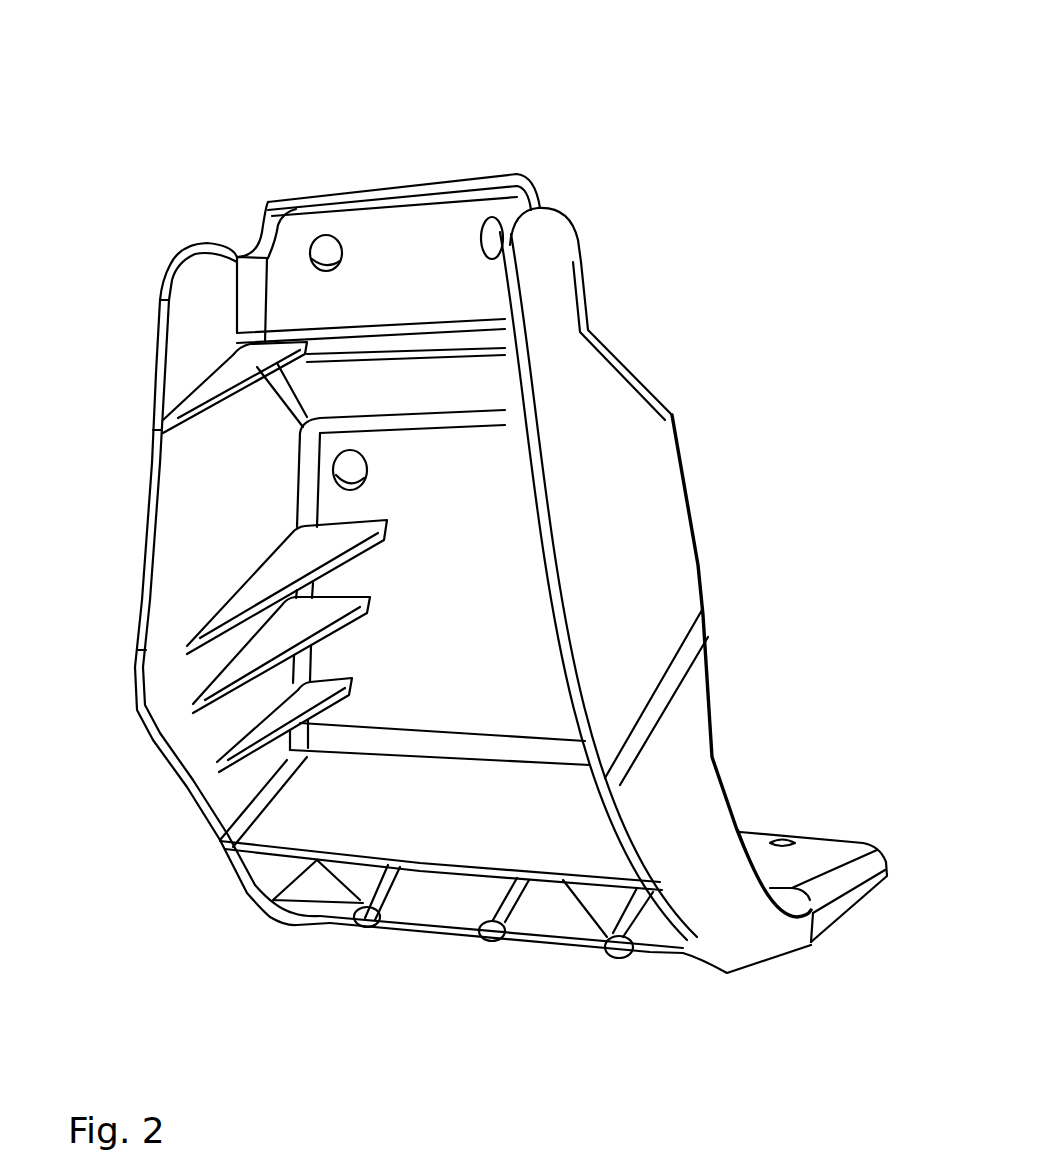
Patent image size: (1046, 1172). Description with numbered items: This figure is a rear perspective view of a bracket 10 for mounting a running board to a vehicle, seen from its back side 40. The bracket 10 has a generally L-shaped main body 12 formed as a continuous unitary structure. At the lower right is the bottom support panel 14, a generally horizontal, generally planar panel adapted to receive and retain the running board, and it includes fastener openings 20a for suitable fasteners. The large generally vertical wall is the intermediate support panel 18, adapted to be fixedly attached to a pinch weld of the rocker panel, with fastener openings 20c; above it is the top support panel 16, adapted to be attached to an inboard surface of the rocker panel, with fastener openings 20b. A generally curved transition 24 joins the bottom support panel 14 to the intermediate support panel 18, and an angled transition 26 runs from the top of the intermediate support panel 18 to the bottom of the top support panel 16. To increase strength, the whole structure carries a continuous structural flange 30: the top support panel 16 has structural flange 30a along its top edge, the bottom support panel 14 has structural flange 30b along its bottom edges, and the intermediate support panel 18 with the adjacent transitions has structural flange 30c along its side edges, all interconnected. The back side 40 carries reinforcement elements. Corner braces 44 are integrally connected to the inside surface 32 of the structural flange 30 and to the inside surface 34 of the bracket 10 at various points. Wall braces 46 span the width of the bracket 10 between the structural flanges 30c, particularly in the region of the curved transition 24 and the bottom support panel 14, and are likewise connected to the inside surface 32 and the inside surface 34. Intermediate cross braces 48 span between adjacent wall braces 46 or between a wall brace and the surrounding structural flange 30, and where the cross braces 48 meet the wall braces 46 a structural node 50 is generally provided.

The bracket 10 is at (679, 131).
The main body 12 is at (707, 637).
The bottom support panel 14 is at (807, 853).
The top support panel 16 is at (540, 207).
The intermediate support panel 18 is at (690, 515).
The fastener openings 20a is at (782, 836).
The fastener openings 20b is at (326, 236).
The fastener openings 20c is at (351, 455).
The curved transition 24 is at (737, 823).
The angled transition 26 is at (627, 365).
The structural flange 30 is at (555, 625).
The structural flange 30a is at (457, 175).
The structural flange 30b is at (808, 940).
The structural flange 30c is at (185, 473).
The inside surface of the structural flange 32 is at (200, 515).
The inside surface of the bracket 34 is at (457, 533).
The back side 40 is at (126, 882).
The corner braces 44 is at (240, 370).
The wall braces 46 is at (593, 833).
The cross braces 48 is at (607, 892).
The structural node 50 is at (360, 920).